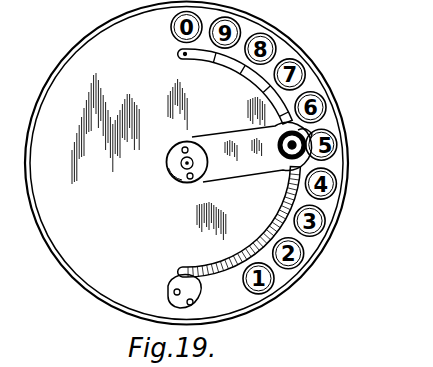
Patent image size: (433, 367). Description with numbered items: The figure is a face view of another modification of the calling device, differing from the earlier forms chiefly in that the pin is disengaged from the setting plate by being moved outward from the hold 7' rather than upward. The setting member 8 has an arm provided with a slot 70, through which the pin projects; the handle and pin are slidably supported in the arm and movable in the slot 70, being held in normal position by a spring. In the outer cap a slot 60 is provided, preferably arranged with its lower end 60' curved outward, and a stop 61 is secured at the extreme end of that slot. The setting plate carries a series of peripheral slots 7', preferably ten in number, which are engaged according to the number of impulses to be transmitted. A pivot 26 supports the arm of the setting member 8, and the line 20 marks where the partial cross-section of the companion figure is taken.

The section line 20 is at (85, 160).
The setting member 8 is at (194, 154).
The slot 70 is at (306, 134).
The arm 26 is at (300, 160).
The slot 60 is at (237, 240).
The lower end of slot 60' is at (198, 261).
The stop 61 is at (170, 294).
The slot 7' is at (272, 244).